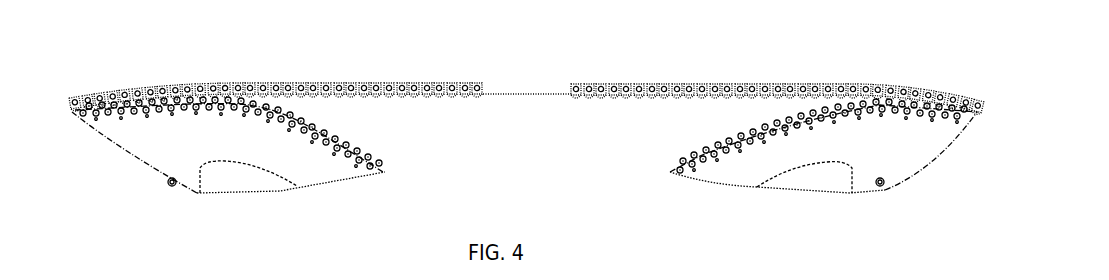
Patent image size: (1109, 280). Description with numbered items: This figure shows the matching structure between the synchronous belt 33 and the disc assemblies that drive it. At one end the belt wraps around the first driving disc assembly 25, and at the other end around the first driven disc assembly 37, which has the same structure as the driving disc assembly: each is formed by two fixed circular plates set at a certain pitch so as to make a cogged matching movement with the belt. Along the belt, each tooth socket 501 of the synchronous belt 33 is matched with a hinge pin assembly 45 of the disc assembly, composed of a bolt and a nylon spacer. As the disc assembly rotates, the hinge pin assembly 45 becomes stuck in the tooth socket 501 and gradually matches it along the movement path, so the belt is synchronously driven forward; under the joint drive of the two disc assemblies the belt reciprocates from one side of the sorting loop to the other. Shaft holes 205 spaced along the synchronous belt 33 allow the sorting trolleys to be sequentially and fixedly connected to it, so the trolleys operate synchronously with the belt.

The first driving disc assembly 25 is at (915, 137).
The synchronous belt 33 is at (800, 87).
The first driven disc assembly 37 is at (182, 122).
The hinge pin assembly 45 is at (885, 93).
The shaft hole 205 is at (777, 95).
The tooth socket 501 is at (840, 97).